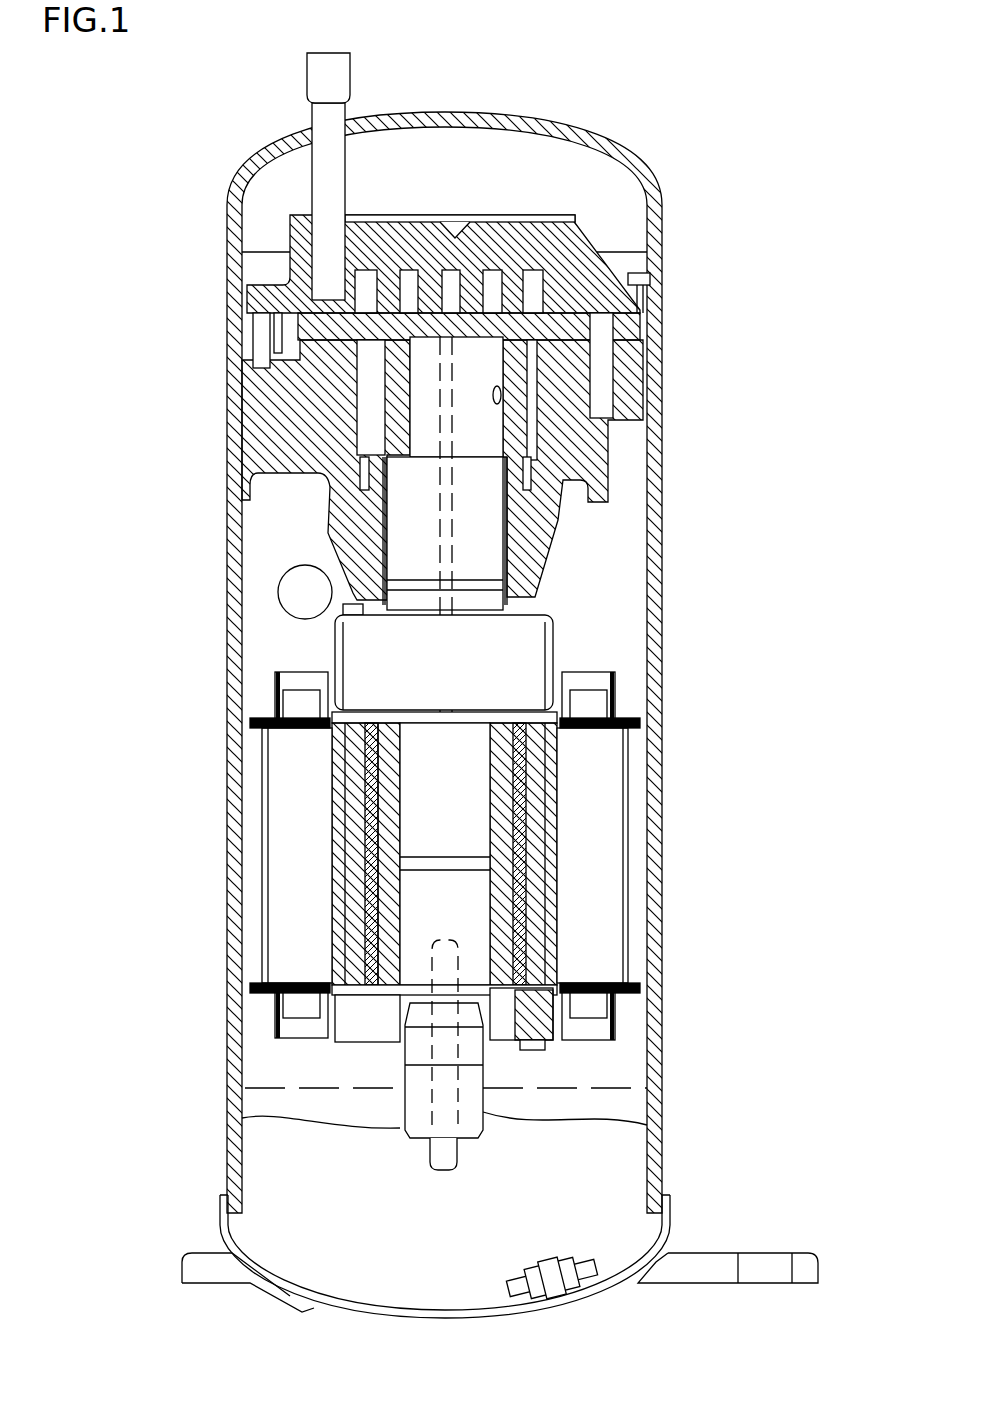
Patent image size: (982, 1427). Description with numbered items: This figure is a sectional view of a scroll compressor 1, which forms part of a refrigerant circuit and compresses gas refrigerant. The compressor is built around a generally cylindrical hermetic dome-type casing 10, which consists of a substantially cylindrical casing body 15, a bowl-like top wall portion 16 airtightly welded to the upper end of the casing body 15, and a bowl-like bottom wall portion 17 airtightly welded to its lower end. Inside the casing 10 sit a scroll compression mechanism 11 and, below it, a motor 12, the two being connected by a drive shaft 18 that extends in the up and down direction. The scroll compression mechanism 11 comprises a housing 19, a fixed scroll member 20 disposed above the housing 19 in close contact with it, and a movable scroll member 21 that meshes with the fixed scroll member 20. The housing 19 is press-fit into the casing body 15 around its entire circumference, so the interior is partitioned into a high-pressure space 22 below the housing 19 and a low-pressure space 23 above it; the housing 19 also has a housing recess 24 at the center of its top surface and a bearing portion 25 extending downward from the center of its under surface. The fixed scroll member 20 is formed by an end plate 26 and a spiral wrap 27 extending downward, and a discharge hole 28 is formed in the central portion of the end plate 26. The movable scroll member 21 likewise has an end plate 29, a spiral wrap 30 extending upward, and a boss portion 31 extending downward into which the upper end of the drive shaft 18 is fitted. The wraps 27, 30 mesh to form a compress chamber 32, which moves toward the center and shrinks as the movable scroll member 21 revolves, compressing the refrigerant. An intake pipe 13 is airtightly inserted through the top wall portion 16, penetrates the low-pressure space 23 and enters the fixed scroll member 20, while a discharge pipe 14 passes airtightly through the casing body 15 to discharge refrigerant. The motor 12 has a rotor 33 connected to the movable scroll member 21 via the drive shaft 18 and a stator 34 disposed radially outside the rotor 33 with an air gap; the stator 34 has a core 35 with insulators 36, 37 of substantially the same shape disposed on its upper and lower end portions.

The scroll compressor 1 is at (170, 745).
The casing 10 is at (662, 633).
The scroll compression mechanism 11 is at (285, 190).
The motor 12 is at (447, 863).
The intake pipe 13 is at (307, 80).
The discharge pipe 14 is at (292, 598).
The casing body 15 is at (655, 538).
The top wall portion 16 is at (655, 185).
The bottom wall portion 17 is at (660, 1232).
The drive shaft 18 is at (470, 1100).
The housing 19 is at (262, 420).
The fixed scroll member 20 is at (548, 238).
The movable scroll member 21 is at (655, 340).
The high-pressure space 22 is at (270, 537).
The low-pressure space 23 is at (403, 150).
The housing recess 24 is at (370, 435).
The bearing portion 25 is at (555, 560).
The end plate 26 is at (395, 240).
The spiral wrap 27 is at (480, 235).
The discharge hole 28 is at (442, 245).
The end plate 29 is at (520, 305).
The spiral wrap 30 is at (565, 265).
The boss portion 31 is at (520, 420).
The compress chamber 32 is at (530, 280).
The rotor 33 is at (530, 775).
The stator 34 is at (595, 880).
The core 35 is at (635, 825).
The insulator 36 is at (618, 685).
The insulator 37 is at (612, 1025).